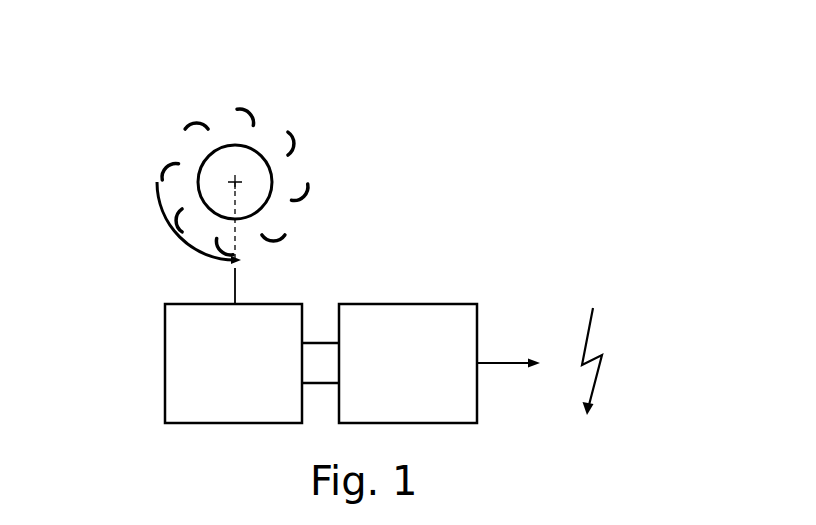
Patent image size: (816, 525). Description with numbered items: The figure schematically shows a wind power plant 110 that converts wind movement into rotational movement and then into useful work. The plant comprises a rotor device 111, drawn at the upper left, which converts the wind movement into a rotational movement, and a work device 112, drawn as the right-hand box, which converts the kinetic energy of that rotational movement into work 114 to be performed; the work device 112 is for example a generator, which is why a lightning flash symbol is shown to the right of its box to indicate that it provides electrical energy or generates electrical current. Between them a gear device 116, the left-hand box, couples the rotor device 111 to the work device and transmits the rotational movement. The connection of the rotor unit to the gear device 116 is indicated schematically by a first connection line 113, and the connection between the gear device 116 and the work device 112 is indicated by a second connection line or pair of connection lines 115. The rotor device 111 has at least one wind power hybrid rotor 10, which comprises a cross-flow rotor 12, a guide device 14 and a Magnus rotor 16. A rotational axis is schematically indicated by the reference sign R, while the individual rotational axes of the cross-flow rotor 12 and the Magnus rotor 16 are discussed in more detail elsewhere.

The wind power hybrid rotor 10 is at (227, 92).
The cross-flow rotor 12 is at (253, 113).
The guide device 14 is at (158, 197).
The Magnus rotor 16 is at (273, 183).
The rotational axis R is at (236, 184).
The wind power plant 110 is at (347, 122).
The rotor device 111 is at (145, 140).
The work device 112 is at (450, 411).
The first connection line 113 is at (235, 289).
The work 114 is at (602, 357).
The pair of connection lines 115 is at (316, 384).
The gear device 116 is at (165, 362).